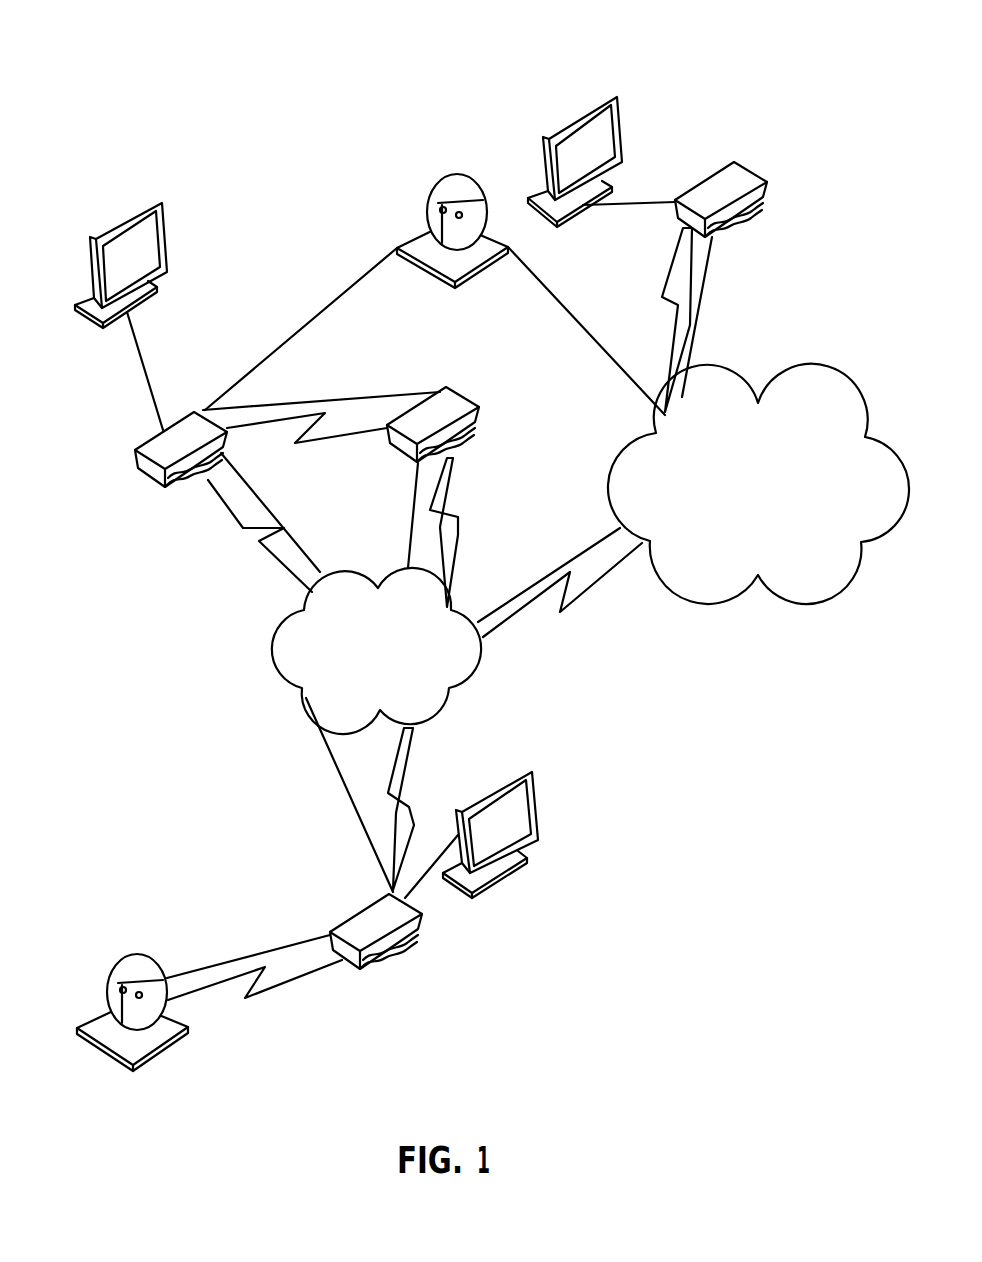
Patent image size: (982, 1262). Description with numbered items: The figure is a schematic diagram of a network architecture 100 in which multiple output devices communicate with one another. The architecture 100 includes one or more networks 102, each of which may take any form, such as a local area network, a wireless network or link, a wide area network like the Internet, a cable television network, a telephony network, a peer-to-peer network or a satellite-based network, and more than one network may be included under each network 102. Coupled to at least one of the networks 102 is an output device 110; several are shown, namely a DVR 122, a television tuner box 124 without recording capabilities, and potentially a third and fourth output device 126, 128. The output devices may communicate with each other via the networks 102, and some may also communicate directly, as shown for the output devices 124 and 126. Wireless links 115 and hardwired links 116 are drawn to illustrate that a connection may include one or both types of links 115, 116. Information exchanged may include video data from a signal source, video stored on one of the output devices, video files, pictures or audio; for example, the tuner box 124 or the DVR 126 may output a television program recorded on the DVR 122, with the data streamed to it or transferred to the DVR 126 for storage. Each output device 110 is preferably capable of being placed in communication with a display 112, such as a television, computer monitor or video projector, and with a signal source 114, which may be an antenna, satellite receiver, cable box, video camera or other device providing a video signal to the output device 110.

The network architecture 100 is at (308, 154).
The network 102 is at (276, 640).
The output device 110 is at (439, 559).
The display 112 is at (172, 215).
The signal source 114 is at (442, 183).
The wireless link 115 is at (422, 742).
The hardwired link 116 is at (343, 790).
The DVR 122 is at (410, 967).
The television tuner box 124 is at (137, 478).
The third output device 126 is at (398, 460).
The fourth output device 128 is at (770, 185).